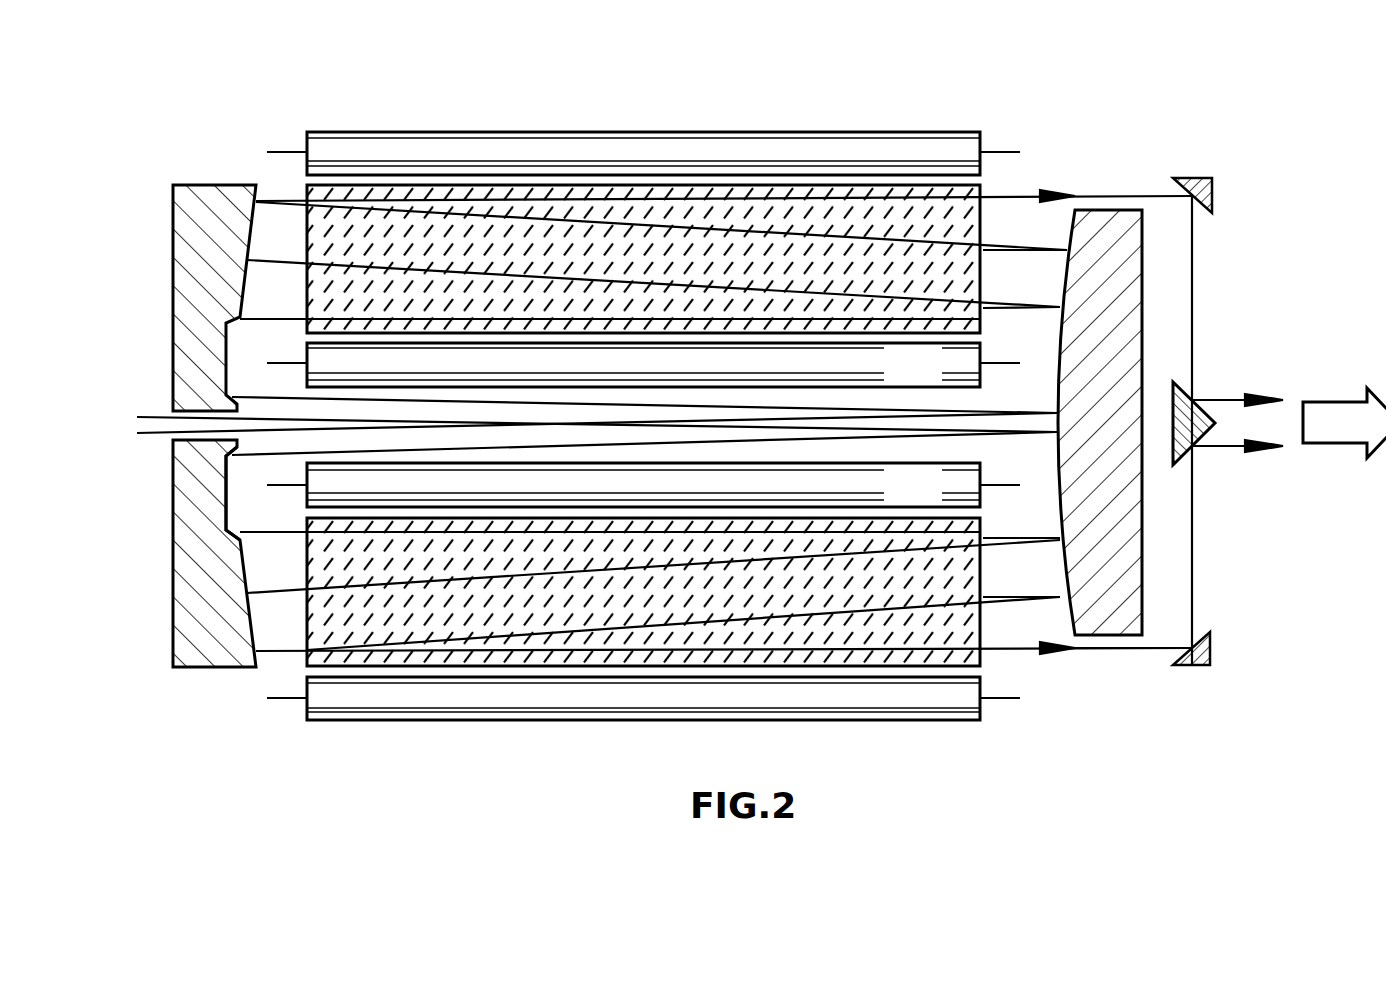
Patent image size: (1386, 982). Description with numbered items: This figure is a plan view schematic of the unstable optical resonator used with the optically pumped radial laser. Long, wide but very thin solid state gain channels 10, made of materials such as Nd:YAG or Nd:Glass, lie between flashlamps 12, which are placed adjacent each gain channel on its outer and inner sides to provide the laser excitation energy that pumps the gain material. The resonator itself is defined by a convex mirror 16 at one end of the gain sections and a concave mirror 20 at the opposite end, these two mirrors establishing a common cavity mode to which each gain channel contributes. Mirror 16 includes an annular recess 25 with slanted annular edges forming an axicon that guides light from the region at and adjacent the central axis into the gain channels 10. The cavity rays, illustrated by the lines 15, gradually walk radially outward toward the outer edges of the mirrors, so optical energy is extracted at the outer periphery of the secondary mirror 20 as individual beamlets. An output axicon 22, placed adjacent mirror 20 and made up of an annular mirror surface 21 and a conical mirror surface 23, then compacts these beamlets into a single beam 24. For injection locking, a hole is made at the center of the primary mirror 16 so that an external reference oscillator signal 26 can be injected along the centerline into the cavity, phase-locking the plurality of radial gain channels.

The gain channel 10 is at (408, 222).
The flashlamp 12 is at (820, 117).
The cavity rays 15 is at (1110, 195).
The convex mirror 16 is at (215, 672).
The concave mirror 20 is at (1103, 670).
The annular mirror surface 21 is at (1212, 662).
The output axicon 22 is at (1208, 472).
The conical mirror surface 23 is at (1192, 380).
The single beam 24 is at (1322, 390).
The annular recess 25 is at (220, 485).
The external reference oscillator signal 26 is at (150, 398).